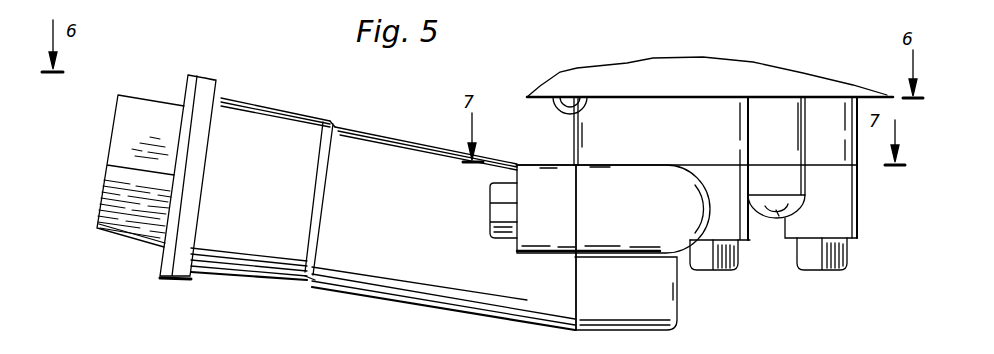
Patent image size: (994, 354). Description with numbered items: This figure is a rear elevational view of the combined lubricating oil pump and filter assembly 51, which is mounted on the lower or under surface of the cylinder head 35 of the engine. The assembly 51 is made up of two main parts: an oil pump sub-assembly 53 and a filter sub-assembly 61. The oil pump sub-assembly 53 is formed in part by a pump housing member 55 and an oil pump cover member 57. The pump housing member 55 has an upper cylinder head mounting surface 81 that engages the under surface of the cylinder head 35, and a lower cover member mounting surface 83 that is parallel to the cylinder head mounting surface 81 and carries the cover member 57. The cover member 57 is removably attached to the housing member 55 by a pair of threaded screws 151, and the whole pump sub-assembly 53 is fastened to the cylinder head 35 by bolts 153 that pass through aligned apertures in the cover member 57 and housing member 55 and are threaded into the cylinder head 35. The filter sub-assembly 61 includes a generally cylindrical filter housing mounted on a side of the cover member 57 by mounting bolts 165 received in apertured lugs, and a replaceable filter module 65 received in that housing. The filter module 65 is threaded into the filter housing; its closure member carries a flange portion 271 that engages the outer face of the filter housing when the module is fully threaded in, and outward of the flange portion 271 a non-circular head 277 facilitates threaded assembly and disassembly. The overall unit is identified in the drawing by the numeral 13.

The probe assembly 13 is at (445, 345).
The cylinder head 35 is at (726, 70).
The combined lubricating oil pump and filter assembly 51 is at (824, 284).
The oil pump sub-assembly 53 is at (712, 155).
The pump housing member 55 is at (836, 108).
The oil pump cover member 57 is at (834, 228).
The filter sub-assembly 61 is at (392, 267).
The replaceable filter module 65 is at (134, 258).
The cylinder head mounting surface 81 is at (563, 97).
The cover member mounting surface 83 is at (647, 165).
The threaded screws 151 is at (785, 212).
The bolts 153 is at (803, 270).
The mounting bolts 165 is at (489, 204).
The flange portion 271 is at (195, 76).
The non-circular head 277 is at (170, 117).